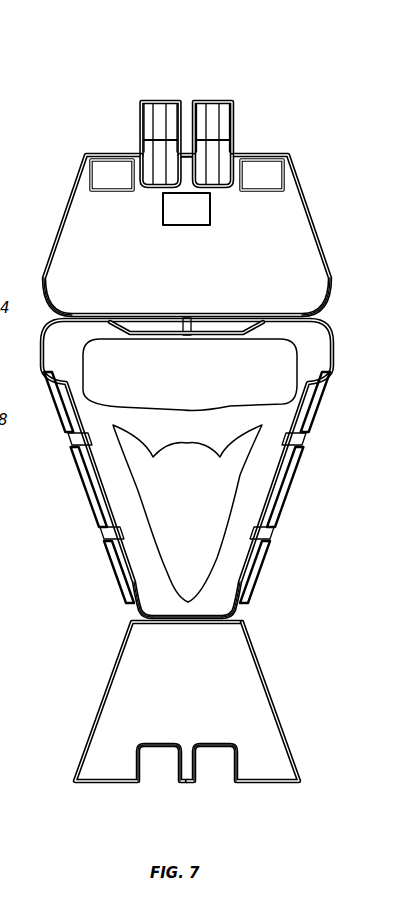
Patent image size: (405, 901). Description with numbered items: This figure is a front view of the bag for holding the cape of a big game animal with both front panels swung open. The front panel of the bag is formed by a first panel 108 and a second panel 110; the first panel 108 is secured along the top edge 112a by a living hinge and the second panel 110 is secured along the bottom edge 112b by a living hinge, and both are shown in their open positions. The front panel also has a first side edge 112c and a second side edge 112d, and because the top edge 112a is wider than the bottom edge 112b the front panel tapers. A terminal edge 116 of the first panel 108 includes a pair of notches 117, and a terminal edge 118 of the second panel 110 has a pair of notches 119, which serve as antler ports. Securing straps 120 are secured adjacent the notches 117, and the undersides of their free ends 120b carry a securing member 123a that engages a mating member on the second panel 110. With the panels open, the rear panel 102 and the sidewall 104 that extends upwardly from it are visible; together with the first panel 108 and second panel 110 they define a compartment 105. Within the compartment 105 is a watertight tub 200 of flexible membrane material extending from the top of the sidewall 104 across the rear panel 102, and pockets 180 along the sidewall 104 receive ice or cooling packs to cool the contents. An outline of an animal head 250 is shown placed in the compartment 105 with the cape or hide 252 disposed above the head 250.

The rear panel 102 is at (237, 585).
The sidewall 104 is at (288, 353).
The compartment 105 is at (227, 605).
The first panel 108 is at (80, 210).
The second panel 110 is at (115, 763).
The top edge 112a is at (78, 308).
The bottom edge 112b is at (163, 622).
The first side edge 112c is at (68, 446).
The second side edge 112d is at (302, 447).
The terminal edge 116 is at (260, 152).
The notches 117 is at (226, 172).
The terminal edge 118 is at (260, 773).
The notches 119 is at (196, 772).
The securing straps 120 is at (146, 146).
The free ends 120b is at (158, 112).
The securing member 123a is at (147, 117).
The pockets 180 is at (229, 333).
The watertight tub 200 is at (313, 358).
The animal head 250 is at (173, 540).
The cape or hide 252 is at (316, 312).